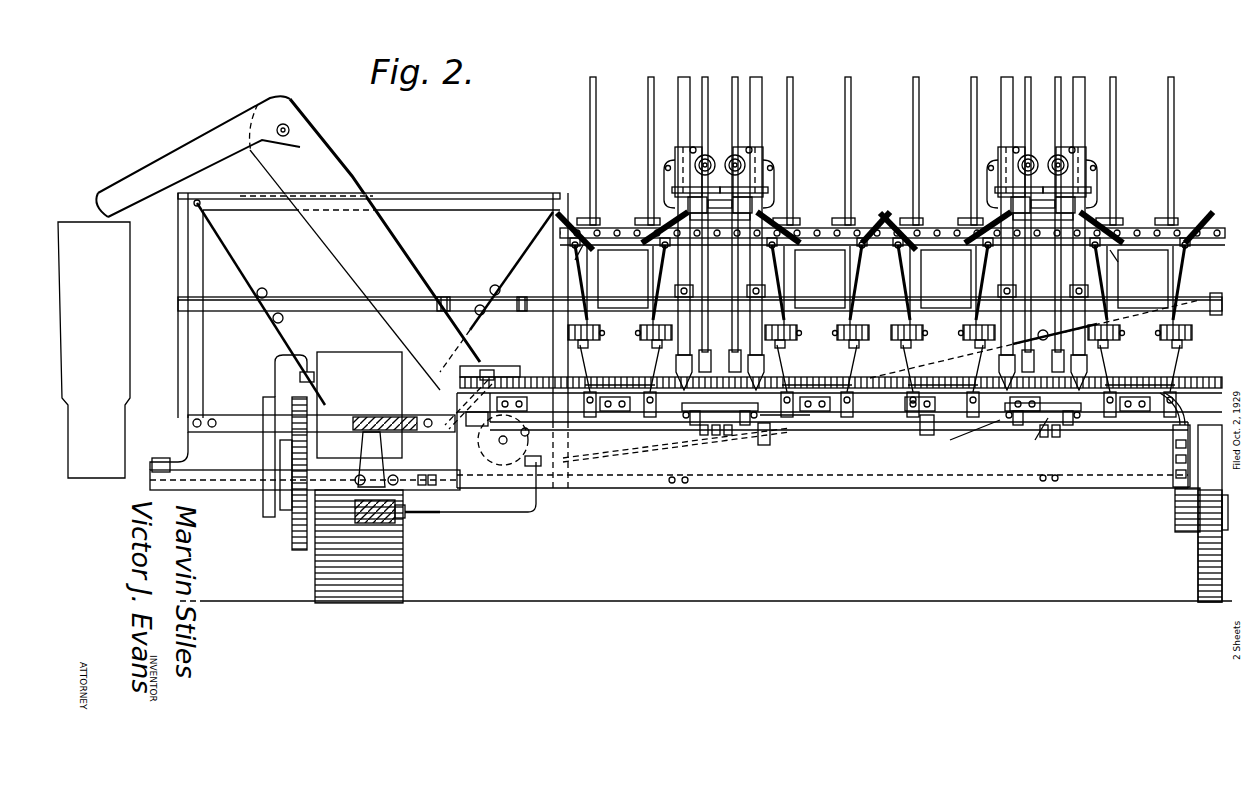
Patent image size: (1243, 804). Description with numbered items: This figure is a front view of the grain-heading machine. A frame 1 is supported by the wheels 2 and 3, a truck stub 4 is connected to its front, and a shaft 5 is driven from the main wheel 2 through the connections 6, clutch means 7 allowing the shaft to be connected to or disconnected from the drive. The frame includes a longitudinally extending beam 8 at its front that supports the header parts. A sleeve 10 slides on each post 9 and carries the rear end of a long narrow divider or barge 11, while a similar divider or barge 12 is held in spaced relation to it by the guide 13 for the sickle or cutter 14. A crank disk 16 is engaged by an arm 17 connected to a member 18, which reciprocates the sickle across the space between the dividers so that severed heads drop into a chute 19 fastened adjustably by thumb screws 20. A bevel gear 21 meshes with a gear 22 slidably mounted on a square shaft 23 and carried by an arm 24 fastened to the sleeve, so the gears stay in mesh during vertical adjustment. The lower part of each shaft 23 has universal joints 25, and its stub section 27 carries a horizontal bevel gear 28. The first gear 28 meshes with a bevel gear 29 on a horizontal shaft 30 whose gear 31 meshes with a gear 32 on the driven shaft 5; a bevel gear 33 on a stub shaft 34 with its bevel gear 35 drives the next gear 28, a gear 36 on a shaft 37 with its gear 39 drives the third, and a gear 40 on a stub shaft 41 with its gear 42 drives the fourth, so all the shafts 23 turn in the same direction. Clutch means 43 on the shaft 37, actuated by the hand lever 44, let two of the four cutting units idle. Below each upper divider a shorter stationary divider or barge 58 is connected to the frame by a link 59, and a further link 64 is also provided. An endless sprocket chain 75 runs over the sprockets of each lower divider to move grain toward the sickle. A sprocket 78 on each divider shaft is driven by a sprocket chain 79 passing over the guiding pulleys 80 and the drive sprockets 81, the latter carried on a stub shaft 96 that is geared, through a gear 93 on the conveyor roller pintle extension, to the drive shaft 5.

The frame 1 is at (985, 489).
The main wheel 2 is at (401, 586).
The wheel 3 is at (1198, 560).
The truck stub 4 is at (350, 515).
The shaft 5 is at (393, 413).
The connections 6 is at (292, 521).
The clutch means 7 is at (313, 412).
The beam 8 is at (823, 486).
The post 9 is at (752, 318).
The sleeve 10 is at (735, 208).
The divider or barge 11 is at (748, 240).
The divider or barge 12 is at (658, 230).
The guide 13 is at (718, 279).
The sickle or cutter 14 is at (646, 224).
The crank disk 16 is at (708, 156).
The arm 17 is at (674, 158).
The member 18 is at (673, 173).
The chute 19 is at (745, 278).
The thumb screws 20 is at (583, 247).
The bevel gear 21 is at (700, 148).
The bevel gear 22 is at (720, 203).
The square shaft 23 is at (736, 86).
The arm 24 is at (672, 190).
The universal joints 25 is at (728, 352).
The stub section 27 is at (688, 430).
The bevel gear 28 is at (708, 430).
The bevel gear 29 is at (676, 446).
The horizontal shaft 30 is at (615, 445).
The gear 31 is at (482, 439).
The gear 32 is at (475, 506).
The bevel gear 33 is at (703, 435).
The stub shaft 34 is at (716, 435).
The bevel gear 35 is at (730, 435).
The gear 36 is at (766, 446).
The shaft 37 is at (806, 418).
The gear 39 is at (975, 441).
The gear 40 is at (1035, 441).
The stub shaft 41 is at (1046, 437).
The gear 42 is at (1058, 437).
The clutch means 43 is at (926, 436).
The hand lever 44 is at (915, 420).
The second divider or barge 58 is at (648, 337).
The link 59 is at (604, 390).
The link 64 is at (655, 305).
The endless sprocket chain 75 is at (834, 334).
The sprocket 78 is at (648, 382).
The sprocket chain 79 is at (548, 380).
The guiding pulleys 80 is at (1178, 416).
The drive sprockets 81 is at (519, 370).
The gear 93 is at (528, 435).
The stub shaft 96 is at (489, 376).